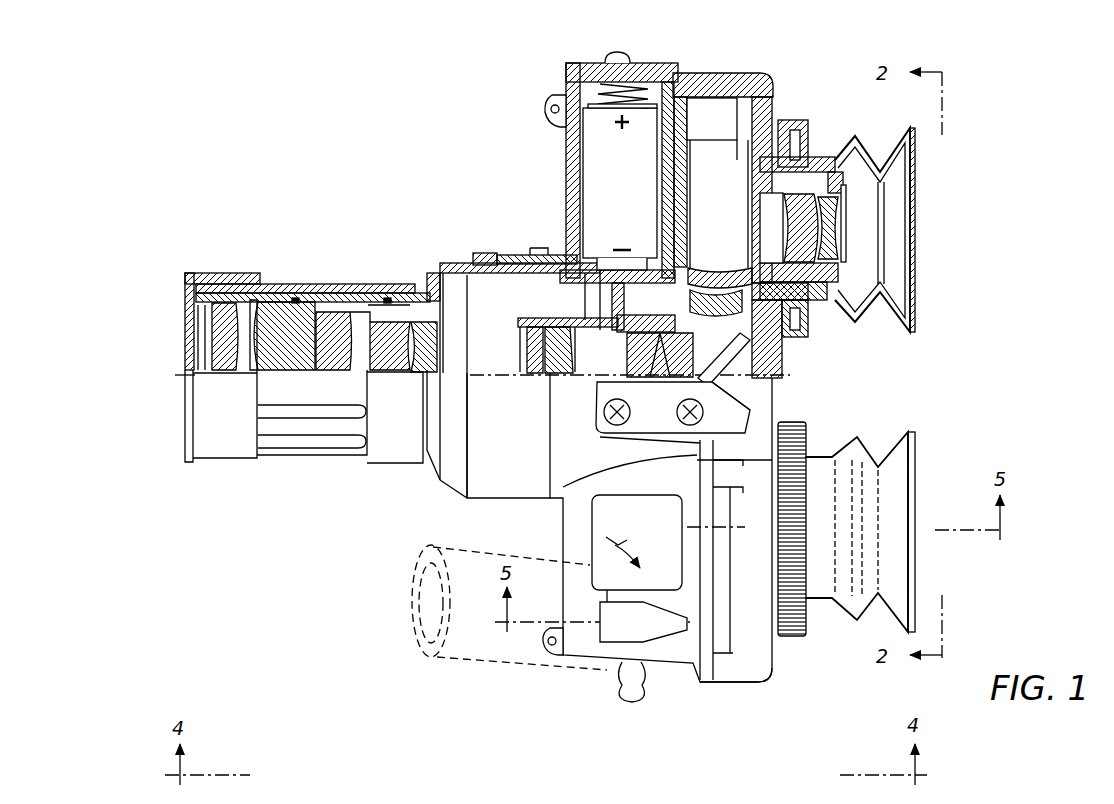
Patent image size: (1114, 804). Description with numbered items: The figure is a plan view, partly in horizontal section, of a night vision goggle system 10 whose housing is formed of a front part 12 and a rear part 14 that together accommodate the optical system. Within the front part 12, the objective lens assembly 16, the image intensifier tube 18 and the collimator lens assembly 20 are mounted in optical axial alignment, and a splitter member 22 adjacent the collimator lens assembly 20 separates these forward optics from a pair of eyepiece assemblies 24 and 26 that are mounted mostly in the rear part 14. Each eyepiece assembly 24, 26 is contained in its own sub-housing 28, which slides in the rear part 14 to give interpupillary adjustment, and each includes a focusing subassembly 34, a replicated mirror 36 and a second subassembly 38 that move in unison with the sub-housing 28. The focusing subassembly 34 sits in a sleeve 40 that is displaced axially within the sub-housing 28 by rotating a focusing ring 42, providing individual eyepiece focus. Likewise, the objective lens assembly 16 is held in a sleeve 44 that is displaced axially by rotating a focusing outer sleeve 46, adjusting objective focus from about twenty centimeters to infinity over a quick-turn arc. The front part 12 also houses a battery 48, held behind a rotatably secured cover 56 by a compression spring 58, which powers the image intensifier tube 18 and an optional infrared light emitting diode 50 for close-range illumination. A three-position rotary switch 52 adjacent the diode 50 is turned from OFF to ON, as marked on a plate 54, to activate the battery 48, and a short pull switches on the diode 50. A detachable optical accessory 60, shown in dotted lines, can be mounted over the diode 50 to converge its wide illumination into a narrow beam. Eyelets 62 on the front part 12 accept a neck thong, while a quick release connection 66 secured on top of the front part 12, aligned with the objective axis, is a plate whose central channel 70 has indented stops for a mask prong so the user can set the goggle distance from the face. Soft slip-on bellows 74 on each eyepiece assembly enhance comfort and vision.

The night vision goggle system 10 is at (150, 492).
The front part of the housing 12 is at (472, 497).
The rear part of the housing 14 is at (737, 684).
The objective lens assembly 16 is at (205, 329).
The image intensifier tube 18 is at (468, 298).
The collimator lens assembly 20 is at (522, 255).
The splitter member 22 is at (752, 353).
The eyepiece assembly 24 is at (832, 156).
The eyepiece assembly 26 is at (824, 454).
The sub-housing 28 is at (768, 113).
The focusing subassembly 34 is at (850, 215).
The replicated mirror 36 is at (700, 262).
The second subassembly 38 is at (657, 258).
The sleeve 40 is at (850, 190).
The focusing ring 42 is at (792, 120).
The sleeve 44 is at (325, 297).
The focusing outer sleeve 46 is at (392, 284).
The battery 48 is at (652, 100).
The infrared light emitting diode 50 is at (652, 645).
The three-position rotary switch 52 is at (626, 692).
The plate 54 is at (592, 524).
The cover 56 is at (577, 64).
The compression spring 58 is at (618, 100).
The detachable optical accessory 60 is at (410, 633).
The eyelets 62 is at (545, 106).
The quick release connection 66 is at (663, 414).
The central channel 70 is at (713, 390).
The bellows 74 is at (900, 312).